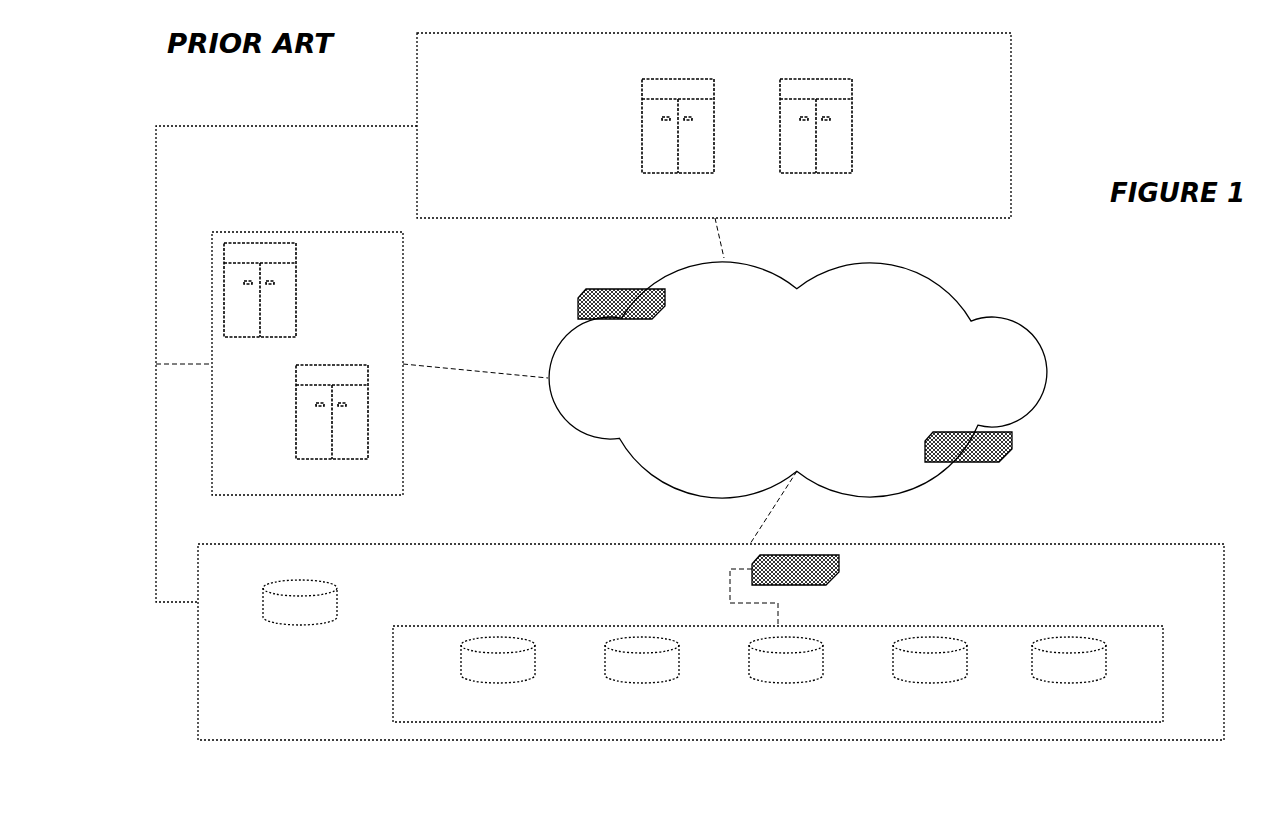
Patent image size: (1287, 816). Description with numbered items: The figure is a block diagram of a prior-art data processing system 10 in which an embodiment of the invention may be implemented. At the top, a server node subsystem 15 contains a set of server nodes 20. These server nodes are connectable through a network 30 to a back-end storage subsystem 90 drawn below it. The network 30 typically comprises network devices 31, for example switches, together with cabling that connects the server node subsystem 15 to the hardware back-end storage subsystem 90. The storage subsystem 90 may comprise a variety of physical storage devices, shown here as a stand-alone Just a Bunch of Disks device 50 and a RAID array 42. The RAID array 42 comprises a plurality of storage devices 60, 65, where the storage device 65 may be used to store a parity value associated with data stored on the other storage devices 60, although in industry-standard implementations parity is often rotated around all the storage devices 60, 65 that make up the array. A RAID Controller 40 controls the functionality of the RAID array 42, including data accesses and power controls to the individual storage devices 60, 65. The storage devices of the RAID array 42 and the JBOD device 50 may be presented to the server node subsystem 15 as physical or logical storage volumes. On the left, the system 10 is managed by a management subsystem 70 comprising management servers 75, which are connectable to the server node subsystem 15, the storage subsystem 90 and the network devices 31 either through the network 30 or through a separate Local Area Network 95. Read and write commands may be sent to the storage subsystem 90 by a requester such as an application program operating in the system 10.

The data processing system 10 is at (1152, 98).
The server node subsystem 15 is at (1011, 125).
The server nodes 20 is at (642, 100).
The network 30 is at (553, 345).
The network devices 31 is at (622, 293).
The RAID Controller 40 is at (839, 571).
The RAID array 42 is at (1105, 626).
The Just a Bunch of Disks (JBOD) device 50 is at (337, 606).
The storage devices 60 is at (535, 660).
The parity storage device 65 is at (1106, 663).
The management subsystem 70 is at (303, 232).
The management servers 75 is at (297, 290).
The back-end storage subsystem 90 is at (503, 544).
The Local Area Network (LAN) 95 is at (228, 126).